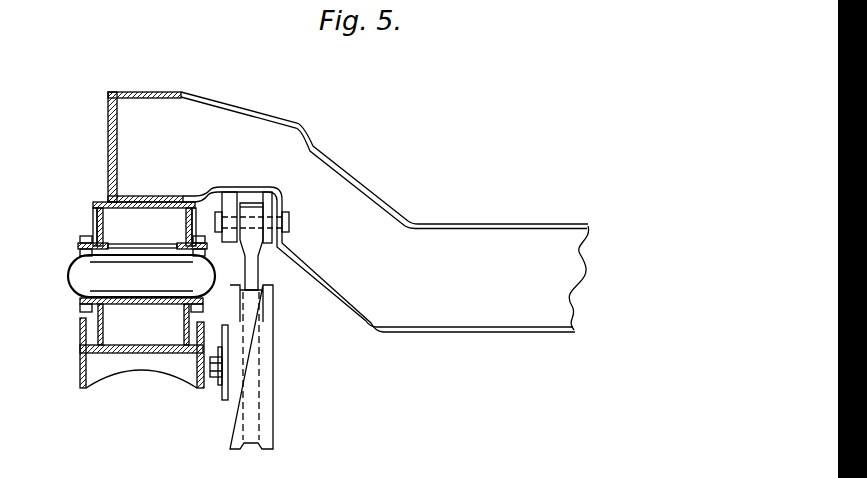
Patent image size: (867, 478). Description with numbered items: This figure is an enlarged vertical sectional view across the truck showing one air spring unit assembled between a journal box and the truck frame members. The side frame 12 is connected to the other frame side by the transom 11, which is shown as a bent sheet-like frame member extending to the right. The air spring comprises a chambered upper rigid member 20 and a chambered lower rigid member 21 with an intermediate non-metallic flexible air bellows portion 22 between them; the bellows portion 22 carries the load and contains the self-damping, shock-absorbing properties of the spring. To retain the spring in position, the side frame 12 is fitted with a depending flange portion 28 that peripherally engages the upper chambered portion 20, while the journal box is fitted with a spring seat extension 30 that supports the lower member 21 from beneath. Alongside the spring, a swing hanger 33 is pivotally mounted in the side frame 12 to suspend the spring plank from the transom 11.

The transom 11 is at (419, 232).
The frame side 12 is at (108, 138).
The upper chambered member 20 is at (103, 220).
The lower chambered member 21 is at (123, 317).
The air bellows portion 22 is at (68, 279).
The depending flange portion 28 is at (93, 204).
The spring seat extension 30 is at (80, 350).
The swing hanger 33 is at (262, 277).